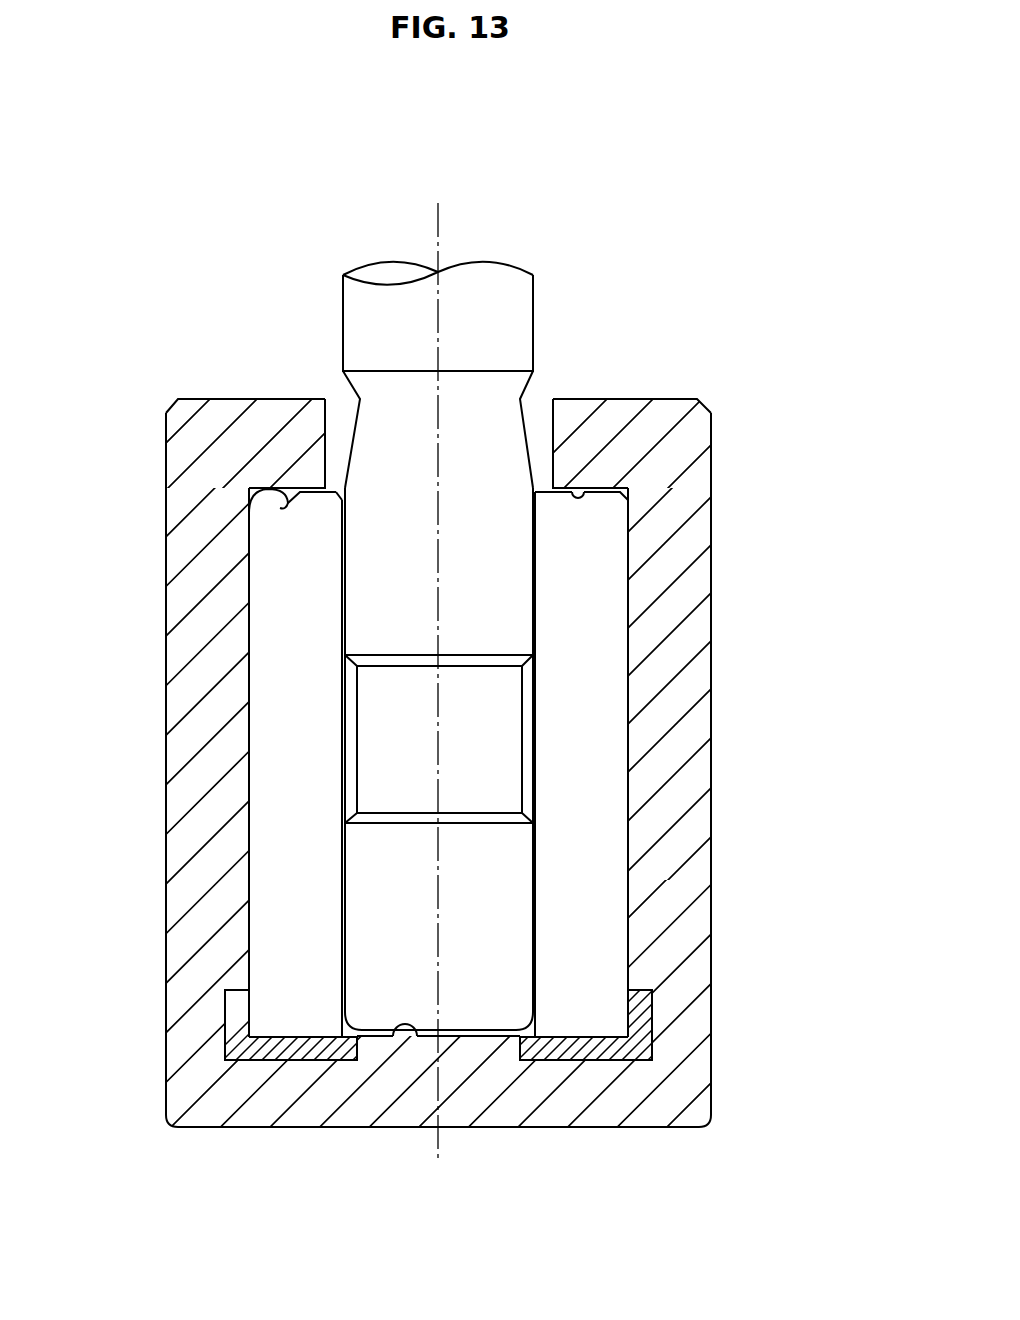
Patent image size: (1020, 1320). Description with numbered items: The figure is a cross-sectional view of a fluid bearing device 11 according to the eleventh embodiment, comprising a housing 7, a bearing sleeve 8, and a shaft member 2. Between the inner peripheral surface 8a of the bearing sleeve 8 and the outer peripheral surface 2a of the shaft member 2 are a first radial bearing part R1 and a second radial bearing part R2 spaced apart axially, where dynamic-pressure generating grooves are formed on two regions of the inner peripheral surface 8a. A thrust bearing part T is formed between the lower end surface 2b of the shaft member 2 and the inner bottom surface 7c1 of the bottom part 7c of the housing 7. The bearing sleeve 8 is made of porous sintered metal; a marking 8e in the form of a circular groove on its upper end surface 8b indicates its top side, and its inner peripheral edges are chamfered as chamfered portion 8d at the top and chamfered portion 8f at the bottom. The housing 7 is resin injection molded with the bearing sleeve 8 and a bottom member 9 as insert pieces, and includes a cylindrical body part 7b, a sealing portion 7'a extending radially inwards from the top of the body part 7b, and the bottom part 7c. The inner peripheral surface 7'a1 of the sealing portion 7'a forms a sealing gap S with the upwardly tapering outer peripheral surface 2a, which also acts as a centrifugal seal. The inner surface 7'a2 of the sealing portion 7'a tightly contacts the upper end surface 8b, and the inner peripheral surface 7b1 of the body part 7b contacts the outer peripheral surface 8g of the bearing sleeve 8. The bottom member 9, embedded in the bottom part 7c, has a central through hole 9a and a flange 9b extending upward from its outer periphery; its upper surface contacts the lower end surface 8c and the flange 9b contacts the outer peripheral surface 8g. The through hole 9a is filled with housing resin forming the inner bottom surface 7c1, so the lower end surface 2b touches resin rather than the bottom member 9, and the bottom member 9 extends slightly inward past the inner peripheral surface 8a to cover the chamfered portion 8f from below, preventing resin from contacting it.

The fluid bearing device 11 is at (700, 270).
The shaft member 2 is at (516, 262).
The outer peripheral surface 2a is at (537, 560).
The lower end surface 2b is at (455, 1036).
The housing 7 is at (510, 775).
The sealing portion 7'a is at (438, 365).
The inner peripheral surface 7'a1 is at (438, 386).
The inner surface 7'a2 is at (180, 498).
The body part 7b is at (178, 700).
The inner peripheral surface 7b1 is at (257, 796).
The bottom part 7c is at (344, 1112).
The inner bottom surface 7c1 is at (393, 1037).
The bearing sleeve 8 is at (615, 790).
The inner peripheral surface 8a is at (535, 598).
The upper end surface 8b is at (613, 490).
The lower end surface 8c is at (574, 1038).
The chamfered portion 8d is at (345, 488).
The marking 8e is at (580, 488).
The chamfered portion 8f is at (340, 1098).
The outer peripheral surface 8g is at (628, 880).
The bottom member 9 is at (655, 1002).
The through hole 9a is at (453, 1026).
The flange 9b is at (204, 1001).
The sealing gap S is at (537, 415).
The thrust bearing part T is at (506, 1038).
The first radial bearing part R1 is at (333, 578).
The second radial bearing part R2 is at (333, 917).